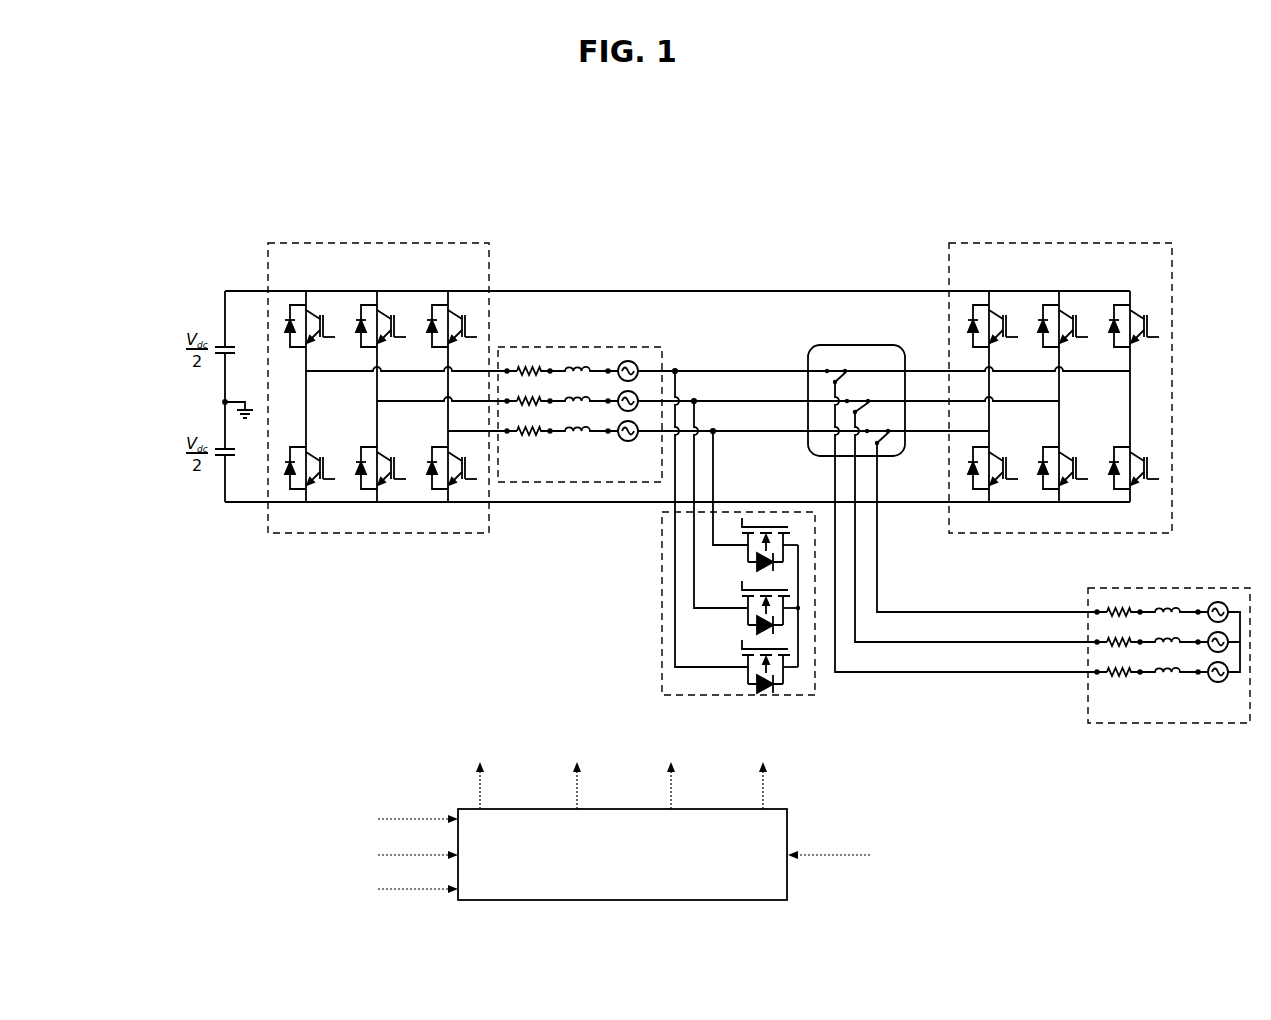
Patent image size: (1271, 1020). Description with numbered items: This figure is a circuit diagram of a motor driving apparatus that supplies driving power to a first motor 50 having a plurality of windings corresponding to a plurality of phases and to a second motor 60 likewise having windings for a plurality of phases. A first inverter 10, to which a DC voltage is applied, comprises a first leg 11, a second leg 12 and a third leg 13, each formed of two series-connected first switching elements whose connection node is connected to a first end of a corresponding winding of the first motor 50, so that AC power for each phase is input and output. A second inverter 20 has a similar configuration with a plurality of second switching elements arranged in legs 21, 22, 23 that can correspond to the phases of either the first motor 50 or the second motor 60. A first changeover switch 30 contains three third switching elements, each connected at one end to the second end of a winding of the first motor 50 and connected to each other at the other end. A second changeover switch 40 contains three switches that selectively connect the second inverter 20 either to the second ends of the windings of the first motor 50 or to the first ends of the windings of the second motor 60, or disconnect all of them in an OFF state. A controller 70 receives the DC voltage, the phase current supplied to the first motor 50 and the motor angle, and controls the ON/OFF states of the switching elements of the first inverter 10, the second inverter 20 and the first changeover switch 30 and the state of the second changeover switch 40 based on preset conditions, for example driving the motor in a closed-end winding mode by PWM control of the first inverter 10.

The first inverter 10 is at (489, 243).
The first leg 11 is at (305, 509).
The second leg 12 is at (376, 509).
The third leg 13 is at (447, 509).
The second inverter 20 is at (1172, 243).
The first leg of second inverter 21 is at (988, 509).
The second leg of second inverter 22 is at (1058, 509).
The third leg of second inverter 23 is at (1129, 509).
The first changeover switch 30 is at (662, 617).
The second changeover switch 40 is at (817, 347).
The first motor 50 is at (613, 347).
The second motor 60 is at (1088, 722).
The controller 70 is at (788, 809).